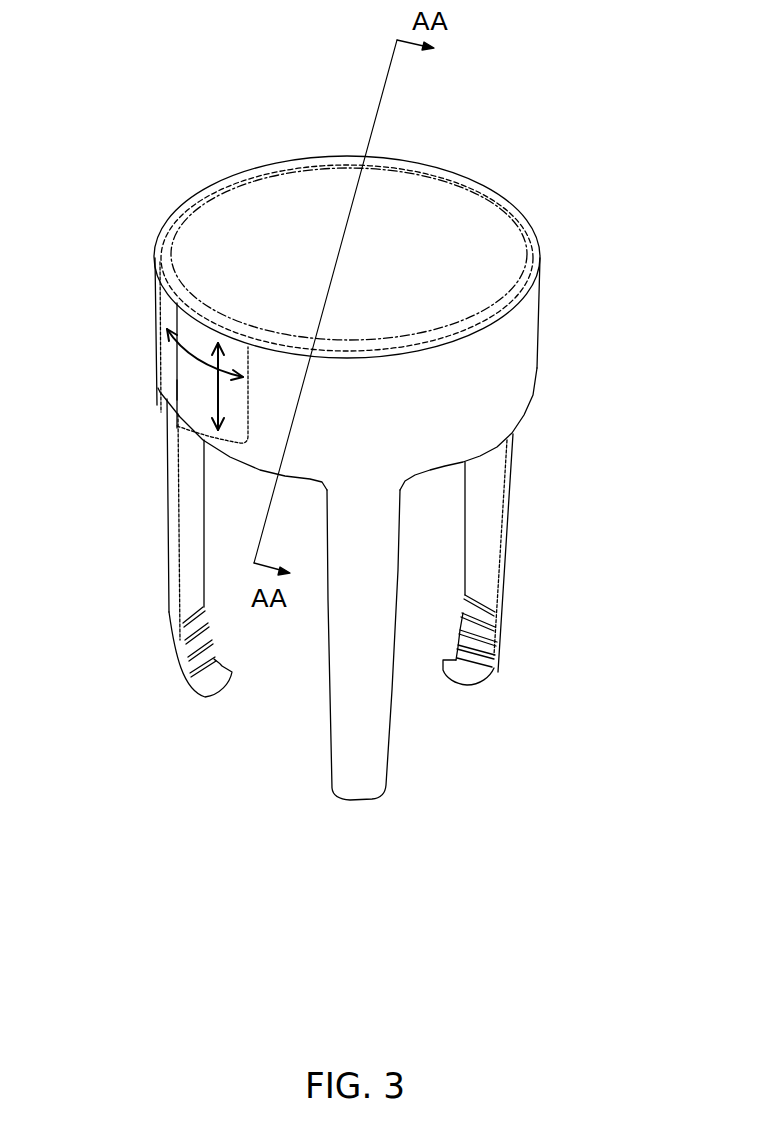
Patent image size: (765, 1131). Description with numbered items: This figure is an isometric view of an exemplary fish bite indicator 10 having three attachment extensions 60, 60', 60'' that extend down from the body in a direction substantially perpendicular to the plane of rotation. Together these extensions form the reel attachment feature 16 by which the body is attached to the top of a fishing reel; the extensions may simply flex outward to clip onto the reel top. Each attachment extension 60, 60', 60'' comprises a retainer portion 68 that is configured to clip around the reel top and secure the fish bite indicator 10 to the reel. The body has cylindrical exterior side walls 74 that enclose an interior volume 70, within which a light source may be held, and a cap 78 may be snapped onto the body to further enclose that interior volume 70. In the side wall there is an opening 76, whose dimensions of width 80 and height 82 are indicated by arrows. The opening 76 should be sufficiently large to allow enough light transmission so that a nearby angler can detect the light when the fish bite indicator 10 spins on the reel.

The fish bite indicator 10 is at (180, 202).
The reel attachment feature 16 is at (204, 612).
The attachment extension 60 is at (129, 519).
The attachment extension 60' is at (544, 553).
The attachment extension 60'' is at (422, 645).
The retainer portion 68 is at (473, 666).
The interior volume 70 is at (194, 393).
The exterior side walls 74 is at (497, 367).
The opening 76 is at (190, 378).
The cap 78 is at (486, 243).
The width 80 is at (180, 360).
The height 82 is at (190, 412).